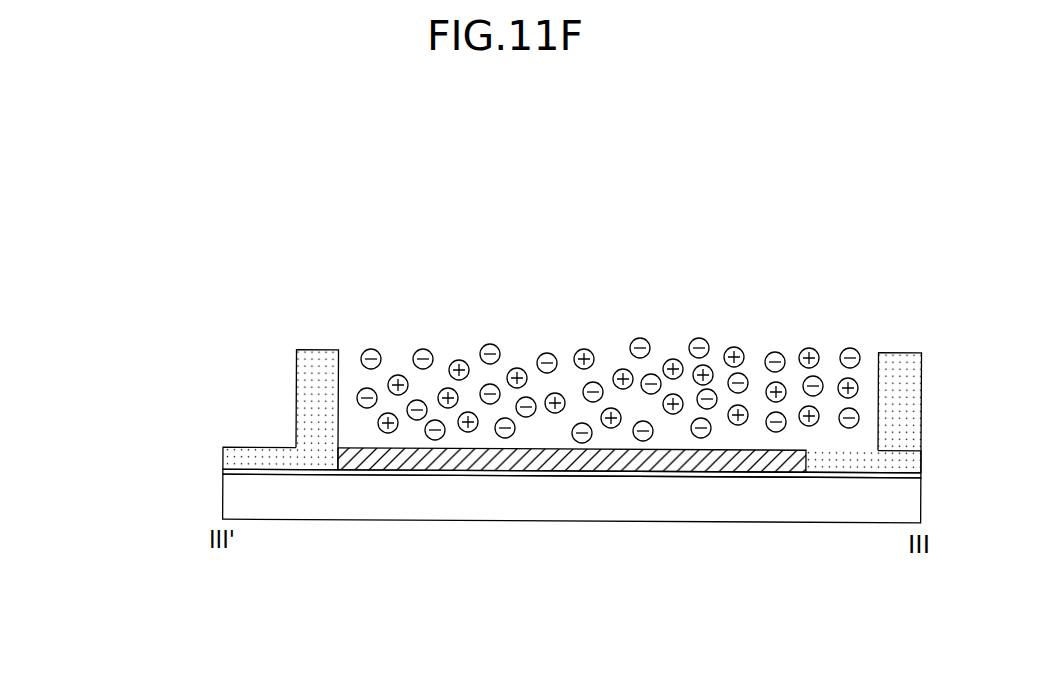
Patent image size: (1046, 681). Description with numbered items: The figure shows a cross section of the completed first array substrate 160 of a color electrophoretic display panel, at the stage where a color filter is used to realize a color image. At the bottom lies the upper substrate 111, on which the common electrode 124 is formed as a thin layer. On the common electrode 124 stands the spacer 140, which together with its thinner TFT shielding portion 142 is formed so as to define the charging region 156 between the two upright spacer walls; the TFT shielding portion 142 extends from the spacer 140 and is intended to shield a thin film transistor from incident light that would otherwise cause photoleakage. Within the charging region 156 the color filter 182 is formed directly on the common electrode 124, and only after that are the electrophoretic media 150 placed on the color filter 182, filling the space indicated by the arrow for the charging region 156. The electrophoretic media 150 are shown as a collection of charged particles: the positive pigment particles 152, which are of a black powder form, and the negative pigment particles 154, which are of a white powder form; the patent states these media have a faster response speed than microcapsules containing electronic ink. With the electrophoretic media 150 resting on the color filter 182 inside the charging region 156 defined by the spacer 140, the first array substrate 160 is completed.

The upper substrate 111 is at (225, 495).
The common electrode 124 is at (225, 472).
The spacer 140 is at (302, 414).
The TFT shielding portion 142 is at (233, 453).
The electrophoretic media 150 is at (608, 483).
The positive pigment particle 152 is at (469, 432).
The negative pigment particle 154 is at (507, 437).
The charging region 156 is at (346, 379).
The first array substrate 160 is at (126, 488).
The color filter 182 is at (623, 462).